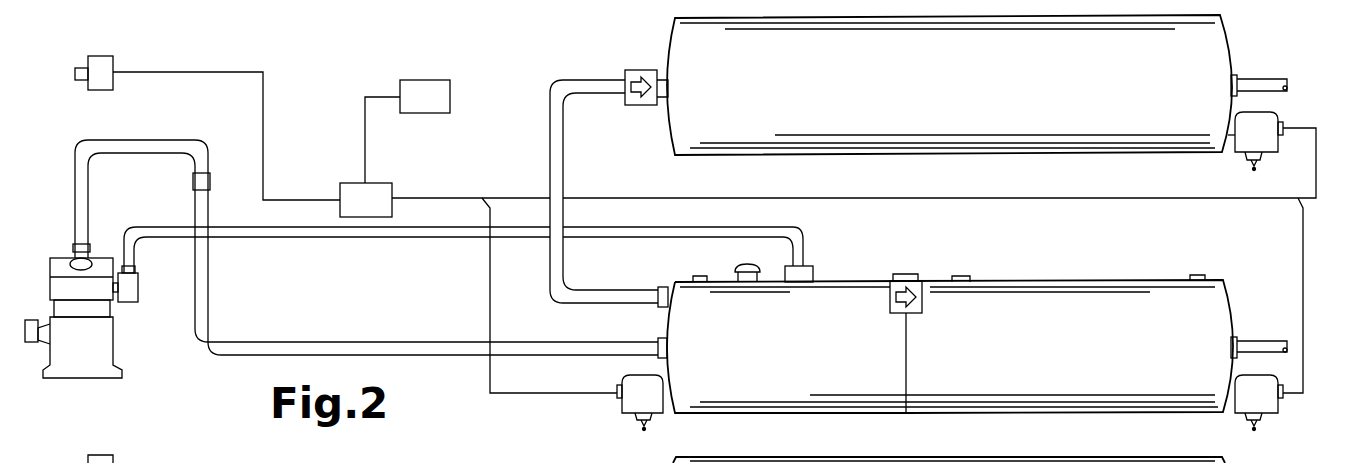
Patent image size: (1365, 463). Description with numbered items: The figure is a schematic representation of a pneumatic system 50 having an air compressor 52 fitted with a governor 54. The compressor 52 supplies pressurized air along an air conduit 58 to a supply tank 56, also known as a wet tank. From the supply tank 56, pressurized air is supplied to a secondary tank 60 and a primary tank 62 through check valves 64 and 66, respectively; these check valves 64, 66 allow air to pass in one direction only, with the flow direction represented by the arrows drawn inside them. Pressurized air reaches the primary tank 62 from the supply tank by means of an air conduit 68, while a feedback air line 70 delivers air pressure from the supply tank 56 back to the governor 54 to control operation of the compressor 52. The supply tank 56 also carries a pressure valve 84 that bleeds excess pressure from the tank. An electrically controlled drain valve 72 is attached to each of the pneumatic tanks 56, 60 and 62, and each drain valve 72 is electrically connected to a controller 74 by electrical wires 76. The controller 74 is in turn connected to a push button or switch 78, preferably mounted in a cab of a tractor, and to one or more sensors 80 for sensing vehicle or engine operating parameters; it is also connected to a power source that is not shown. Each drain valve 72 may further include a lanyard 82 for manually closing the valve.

The pneumatic system 50 is at (320, 100).
The air compressor 52 is at (100, 378).
The governor 54 is at (138, 288).
The supply tank 56 is at (800, 413).
The air conduit 58 is at (445, 358).
The secondary tank 60 is at (1070, 413).
The primary tank 62 is at (975, 155).
The check valve 64 is at (922, 300).
The check valve 66 is at (637, 105).
The air conduit 68 is at (550, 152).
The feedback air line 70 is at (355, 237).
The electrically controlled drain valve 72 is at (1270, 112).
The controller 74 is at (385, 183).
The electrical wires 76 is at (1085, 197).
The switch 78 is at (100, 56).
The sensor 80 is at (450, 93).
The lanyard 82 is at (1255, 165).
The pressure valve 84 is at (745, 264).